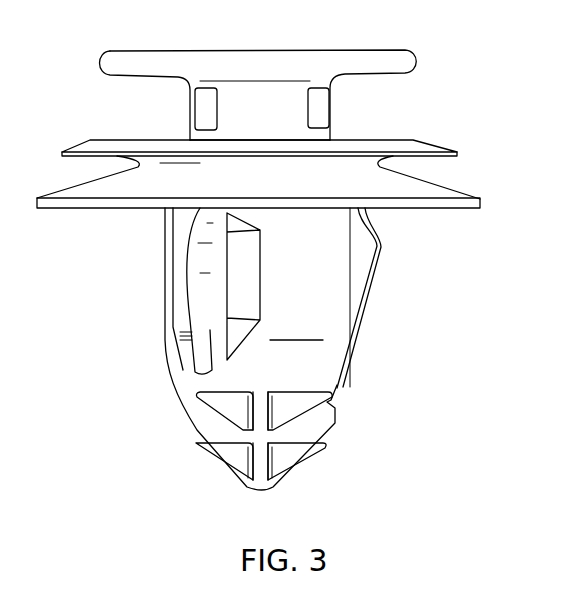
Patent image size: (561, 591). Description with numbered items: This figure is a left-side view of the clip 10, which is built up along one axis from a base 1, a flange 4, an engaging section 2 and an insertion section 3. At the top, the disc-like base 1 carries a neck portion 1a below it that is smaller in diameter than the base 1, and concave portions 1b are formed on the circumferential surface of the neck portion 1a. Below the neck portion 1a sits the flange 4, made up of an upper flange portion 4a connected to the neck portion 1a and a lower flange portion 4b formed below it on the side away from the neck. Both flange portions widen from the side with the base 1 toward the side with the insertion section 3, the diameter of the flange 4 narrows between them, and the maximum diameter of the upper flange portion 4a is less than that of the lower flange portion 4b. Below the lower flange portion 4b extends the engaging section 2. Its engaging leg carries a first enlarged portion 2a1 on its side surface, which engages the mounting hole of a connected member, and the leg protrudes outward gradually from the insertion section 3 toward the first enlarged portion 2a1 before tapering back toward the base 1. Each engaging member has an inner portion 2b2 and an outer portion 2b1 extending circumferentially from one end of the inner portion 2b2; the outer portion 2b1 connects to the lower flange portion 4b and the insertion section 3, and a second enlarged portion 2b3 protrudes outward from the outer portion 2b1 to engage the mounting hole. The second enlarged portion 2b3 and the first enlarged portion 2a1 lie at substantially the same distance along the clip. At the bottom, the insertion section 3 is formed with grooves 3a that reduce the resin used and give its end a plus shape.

The clip 10 is at (85, 63).
The base 1 is at (387, 62).
The neck portion 1a is at (335, 86).
The concave portions 1b is at (320, 112).
The flange 4 is at (503, 123).
The upper flange portion 4a is at (413, 146).
The lower flange portion 4b is at (427, 188).
The engaging section 2 is at (490, 212).
The first enlarged portion 2a1 is at (378, 260).
The outer portion 2b1 is at (320, 313).
The inner portion 2b2 is at (167, 288).
The second enlarged portion 2b3 is at (197, 253).
The insertion section 3 is at (283, 437).
The grooves 3a is at (224, 455).